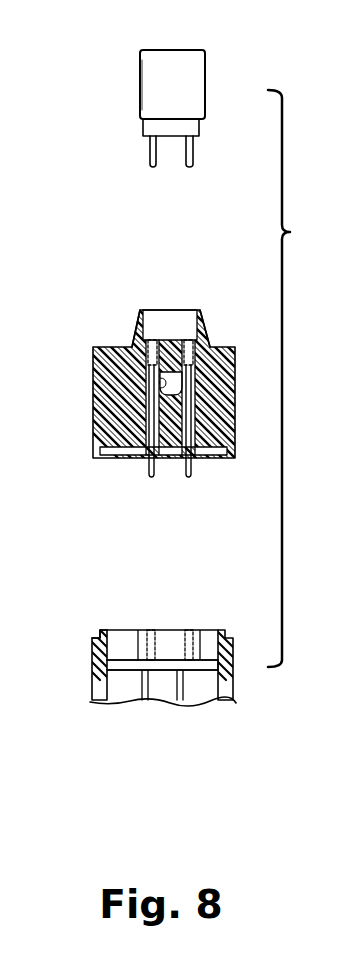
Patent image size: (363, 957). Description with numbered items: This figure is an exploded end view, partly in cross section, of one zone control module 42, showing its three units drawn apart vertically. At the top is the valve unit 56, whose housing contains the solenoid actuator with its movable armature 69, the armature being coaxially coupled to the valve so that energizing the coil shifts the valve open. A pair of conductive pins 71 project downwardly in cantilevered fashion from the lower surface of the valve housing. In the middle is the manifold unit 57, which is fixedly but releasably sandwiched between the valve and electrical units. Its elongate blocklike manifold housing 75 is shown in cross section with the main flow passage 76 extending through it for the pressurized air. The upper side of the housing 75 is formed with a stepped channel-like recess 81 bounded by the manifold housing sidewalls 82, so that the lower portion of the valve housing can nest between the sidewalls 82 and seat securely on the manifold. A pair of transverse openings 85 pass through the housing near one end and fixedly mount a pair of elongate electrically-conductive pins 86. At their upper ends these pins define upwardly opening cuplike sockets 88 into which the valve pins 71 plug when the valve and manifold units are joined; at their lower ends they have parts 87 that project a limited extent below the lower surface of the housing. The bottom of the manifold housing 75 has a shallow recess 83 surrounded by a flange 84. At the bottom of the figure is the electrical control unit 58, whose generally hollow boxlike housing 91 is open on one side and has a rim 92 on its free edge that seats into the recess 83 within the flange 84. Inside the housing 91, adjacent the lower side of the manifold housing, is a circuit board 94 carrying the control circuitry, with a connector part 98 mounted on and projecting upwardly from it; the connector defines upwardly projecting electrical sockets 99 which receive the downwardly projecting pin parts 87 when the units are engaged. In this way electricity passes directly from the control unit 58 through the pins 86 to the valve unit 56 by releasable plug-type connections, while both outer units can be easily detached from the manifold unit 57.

The zone control module 42 is at (295, 378).
The valve unit 56 is at (136, 47).
The movable armature 69 is at (196, 60).
The conductive pins 71 is at (152, 163).
The manifold unit 57 is at (137, 304).
The stepped channel-like recess 81 is at (175, 315).
The manifold housing sidewalls 82 is at (205, 325).
The cuplike sockets 88 is at (193, 350).
The manifold housing 75 is at (113, 360).
The main flow passage 76 is at (163, 385).
The transverse openings 85 is at (187, 393).
The electrically-conductive pins 86 is at (150, 415).
The downwardly projecting pin parts 87 is at (183, 467).
The shallow recess 83 is at (205, 454).
The flange 84 is at (237, 452).
The electrical control unit 58 is at (101, 717).
The boxlike housing 91 is at (100, 673).
The rim 92 is at (99, 630).
The connector part 98 is at (167, 638).
The electrical sockets 99 is at (147, 630).
The circuit board 94 is at (193, 667).